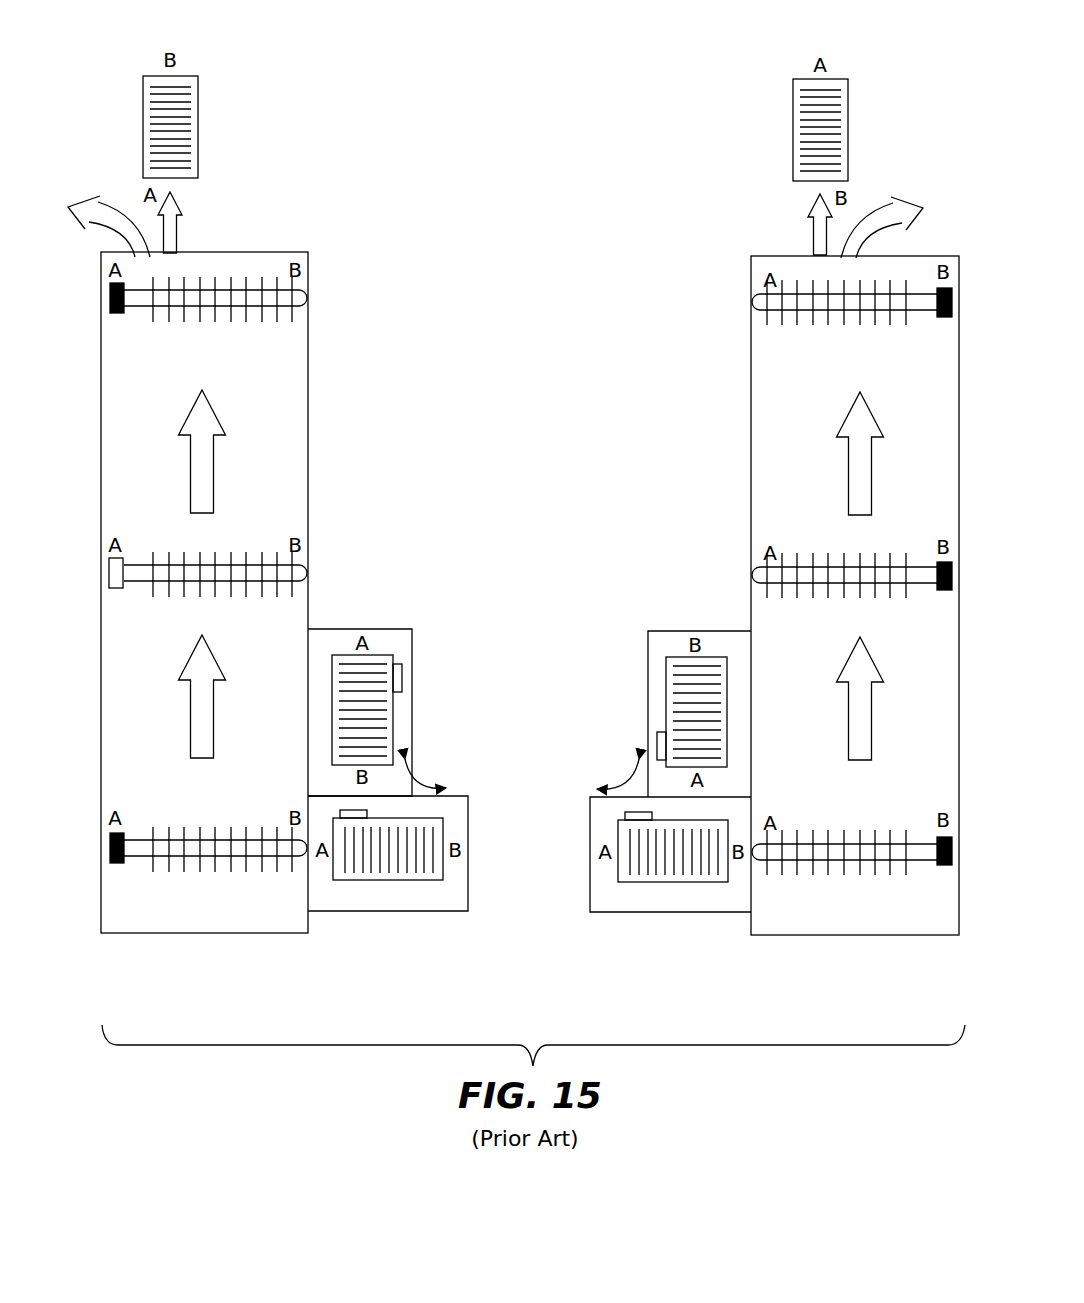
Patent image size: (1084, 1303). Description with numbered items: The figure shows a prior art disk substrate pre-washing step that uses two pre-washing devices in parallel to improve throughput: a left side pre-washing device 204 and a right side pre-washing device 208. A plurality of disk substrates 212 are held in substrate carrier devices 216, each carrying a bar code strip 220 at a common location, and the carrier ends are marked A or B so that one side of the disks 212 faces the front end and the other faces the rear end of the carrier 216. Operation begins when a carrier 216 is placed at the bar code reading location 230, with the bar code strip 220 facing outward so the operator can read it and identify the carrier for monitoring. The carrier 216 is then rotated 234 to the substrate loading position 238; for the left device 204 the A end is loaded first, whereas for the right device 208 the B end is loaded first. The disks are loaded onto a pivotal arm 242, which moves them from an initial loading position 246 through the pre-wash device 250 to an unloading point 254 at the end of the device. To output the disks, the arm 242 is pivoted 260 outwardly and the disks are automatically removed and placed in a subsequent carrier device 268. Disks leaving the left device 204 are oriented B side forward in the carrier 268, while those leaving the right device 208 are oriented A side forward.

The left side pre-washing device 204 is at (308, 435).
The right side pre-washing device 208 is at (751, 379).
The disk substrates 212 is at (375, 707).
The substrate carrier device 216 is at (343, 655).
The bar code strip 220 is at (403, 673).
The bar code reading location 230 is at (403, 606).
The rotation of carrier 234 is at (423, 777).
The substrate loading position 238 is at (393, 880).
The pivotal arm 242 is at (132, 310).
The initial loading position 246 is at (178, 863).
The pre-wash device 250 is at (207, 593).
The unloading point 254 is at (208, 313).
The outward pivoting of arm 260 is at (104, 206).
The subsequent carrier device 268 is at (198, 150).